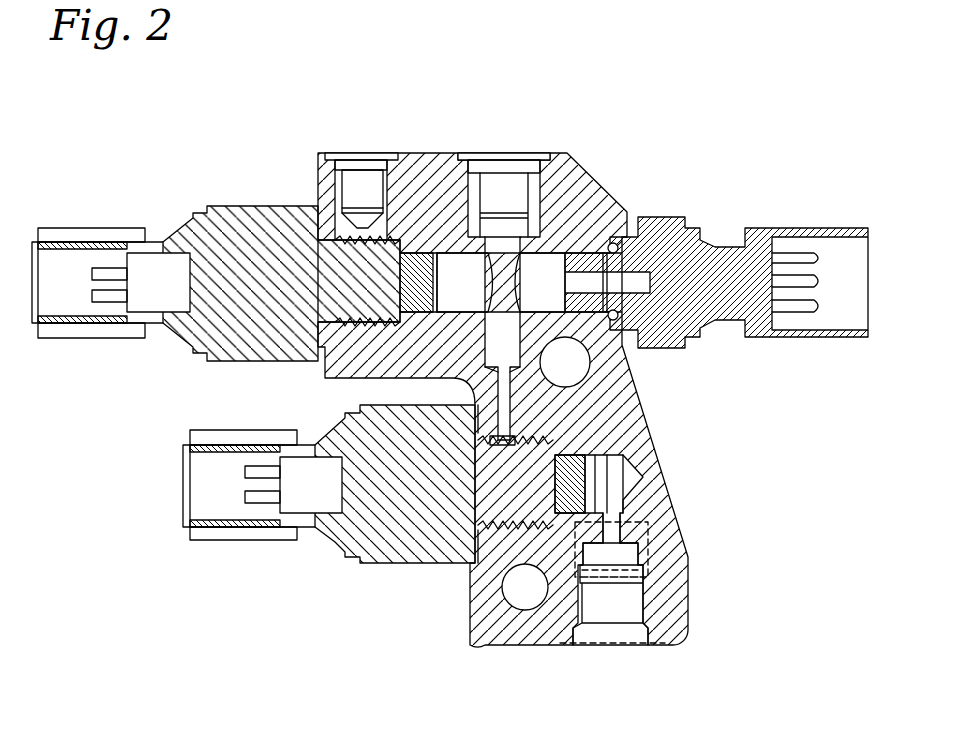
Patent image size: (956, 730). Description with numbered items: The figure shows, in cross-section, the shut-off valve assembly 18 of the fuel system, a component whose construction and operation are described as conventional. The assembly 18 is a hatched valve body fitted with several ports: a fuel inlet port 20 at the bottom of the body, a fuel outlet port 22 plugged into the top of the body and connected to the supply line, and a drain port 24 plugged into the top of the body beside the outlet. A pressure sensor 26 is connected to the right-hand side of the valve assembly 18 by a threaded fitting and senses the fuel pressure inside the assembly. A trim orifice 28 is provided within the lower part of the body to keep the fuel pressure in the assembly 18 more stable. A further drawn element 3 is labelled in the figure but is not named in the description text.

The check valve 3 is at (662, 570).
The shut-off valve assembly 18 is at (214, 575).
The fuel inlet port 20 is at (633, 646).
The fuel outlet port 22 is at (512, 153).
The drain port 24 is at (360, 163).
The pressure sensor 26 is at (727, 205).
The trim orifice 28 is at (668, 512).